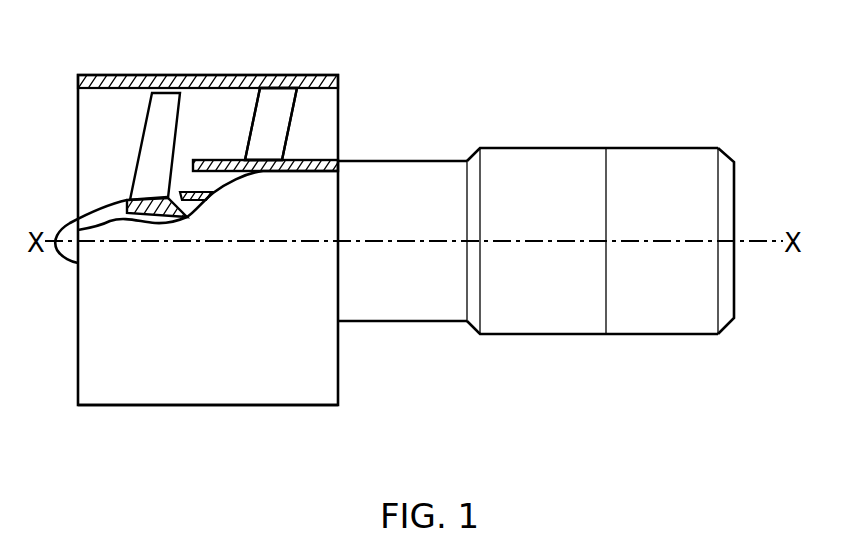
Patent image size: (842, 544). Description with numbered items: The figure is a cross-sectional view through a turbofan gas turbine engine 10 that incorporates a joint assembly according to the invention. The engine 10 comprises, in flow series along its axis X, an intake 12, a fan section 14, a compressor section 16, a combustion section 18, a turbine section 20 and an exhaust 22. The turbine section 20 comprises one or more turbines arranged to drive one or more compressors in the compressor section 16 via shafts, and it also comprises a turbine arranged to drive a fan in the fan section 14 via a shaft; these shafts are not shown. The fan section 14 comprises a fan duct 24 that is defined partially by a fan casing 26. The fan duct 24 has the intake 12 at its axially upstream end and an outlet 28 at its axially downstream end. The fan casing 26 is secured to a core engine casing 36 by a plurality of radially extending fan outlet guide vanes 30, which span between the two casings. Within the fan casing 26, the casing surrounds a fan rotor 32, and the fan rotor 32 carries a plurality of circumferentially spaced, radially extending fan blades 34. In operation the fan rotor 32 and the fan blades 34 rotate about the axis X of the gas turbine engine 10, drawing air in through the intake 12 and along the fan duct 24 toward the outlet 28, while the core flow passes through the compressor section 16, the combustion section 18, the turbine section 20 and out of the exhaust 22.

The turbofan gas turbine engine 10 is at (590, 128).
The intake 12 is at (87, 324).
The fan section 14 is at (220, 392).
The compressor section 16 is at (395, 308).
The combustion section 18 is at (535, 320).
The turbine section 20 is at (660, 317).
The exhaust 22 is at (723, 310).
The fan duct 24 is at (224, 143).
The fan casing 26 is at (250, 75).
The outlet 28 is at (338, 92).
The fan outlet guide vanes 30 is at (280, 123).
The fan rotor 32 is at (147, 197).
The fan blades 34 is at (153, 148).
The core engine casing 36 is at (322, 158).